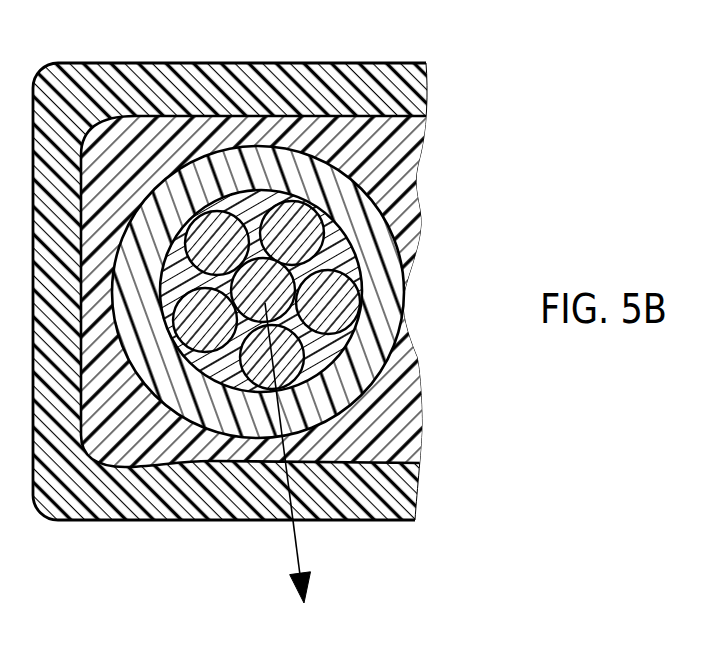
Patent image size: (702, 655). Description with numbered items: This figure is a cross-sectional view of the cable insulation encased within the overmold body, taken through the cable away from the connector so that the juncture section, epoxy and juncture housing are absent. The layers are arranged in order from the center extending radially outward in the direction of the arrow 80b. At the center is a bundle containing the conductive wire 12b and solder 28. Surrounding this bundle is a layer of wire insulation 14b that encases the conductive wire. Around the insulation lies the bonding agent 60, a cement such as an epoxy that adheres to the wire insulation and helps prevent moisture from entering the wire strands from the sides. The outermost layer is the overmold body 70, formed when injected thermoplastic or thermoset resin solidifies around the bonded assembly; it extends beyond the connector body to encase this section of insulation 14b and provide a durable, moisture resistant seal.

The overmold body 70 is at (342, 100).
The bonding agent 60 is at (200, 130).
The wire insulation 14b is at (163, 202).
The conductive wire 12b is at (206, 376).
The solder 28 is at (266, 392).
The arrow 80b is at (298, 552).